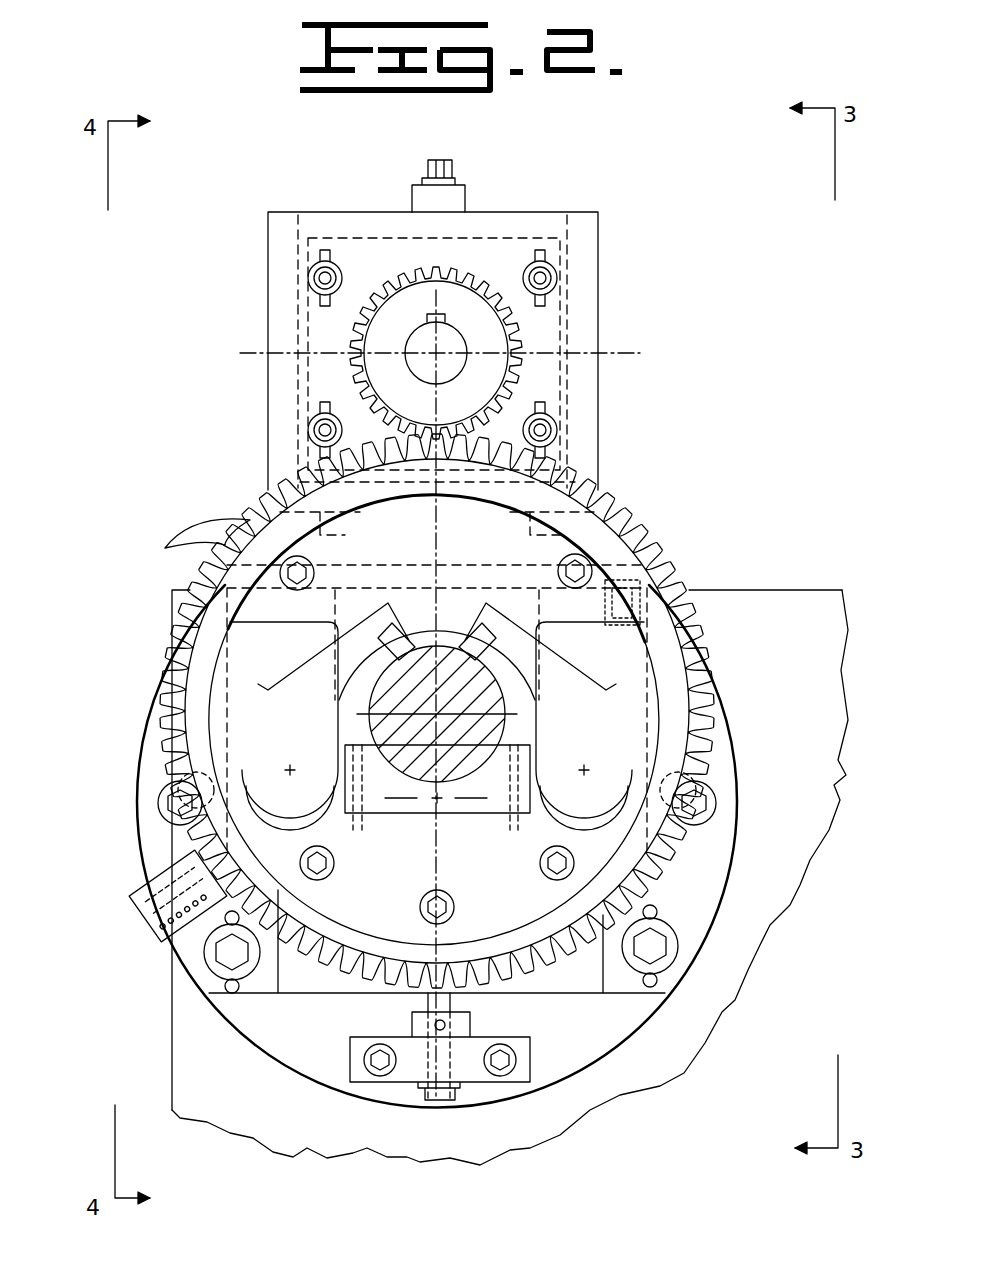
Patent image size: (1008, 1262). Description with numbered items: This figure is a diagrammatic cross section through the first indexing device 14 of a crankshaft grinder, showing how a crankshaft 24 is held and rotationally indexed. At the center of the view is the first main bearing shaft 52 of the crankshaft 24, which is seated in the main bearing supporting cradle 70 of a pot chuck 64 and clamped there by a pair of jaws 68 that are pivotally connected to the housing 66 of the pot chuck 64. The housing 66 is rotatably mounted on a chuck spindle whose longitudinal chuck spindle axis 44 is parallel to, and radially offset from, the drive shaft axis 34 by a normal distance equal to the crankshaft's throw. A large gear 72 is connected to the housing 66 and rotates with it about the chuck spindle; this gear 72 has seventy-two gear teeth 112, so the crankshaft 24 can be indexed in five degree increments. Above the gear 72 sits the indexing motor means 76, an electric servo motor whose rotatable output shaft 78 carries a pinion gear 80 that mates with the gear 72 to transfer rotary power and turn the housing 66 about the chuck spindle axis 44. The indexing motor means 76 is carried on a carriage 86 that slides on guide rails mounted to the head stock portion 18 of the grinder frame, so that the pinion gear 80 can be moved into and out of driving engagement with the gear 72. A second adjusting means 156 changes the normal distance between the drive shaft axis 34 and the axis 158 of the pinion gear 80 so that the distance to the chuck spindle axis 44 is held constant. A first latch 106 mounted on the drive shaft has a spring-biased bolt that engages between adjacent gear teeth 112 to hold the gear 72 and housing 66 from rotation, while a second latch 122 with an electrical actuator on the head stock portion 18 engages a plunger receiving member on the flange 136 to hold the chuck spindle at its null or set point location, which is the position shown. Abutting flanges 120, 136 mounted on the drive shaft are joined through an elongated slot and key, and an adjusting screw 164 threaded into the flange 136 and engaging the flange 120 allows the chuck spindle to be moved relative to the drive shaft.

The first indexing device 14 is at (825, 336).
The head stock portion 18 is at (826, 790).
The crankshaft 24 is at (418, 650).
The drive shaft axis 34 is at (440, 802).
The chuck spindle axis 44 is at (340, 702).
The first main bearing shaft 52 is at (503, 700).
The pot chuck 64 is at (652, 632).
The housing 66 is at (700, 885).
The jaws 68 is at (270, 690).
The main bearing supporting cradle 70 is at (412, 812).
The gear 72 is at (625, 530).
The indexing motor means 76 is at (640, 258).
The rotatable output shaft 78 is at (456, 340).
The pinion gear 80 is at (520, 348).
The carriage 86 is at (600, 324).
The first latch 106 is at (135, 910).
The gear teeth 112 is at (187, 540).
The flange 120 is at (692, 956).
The second latch 122 is at (675, 542).
The flange 136 is at (625, 1024).
The second adjusting means 156 is at (495, 170).
The axis of the pinion gear 158 is at (428, 353).
The adjusting screw 164 is at (437, 1098).